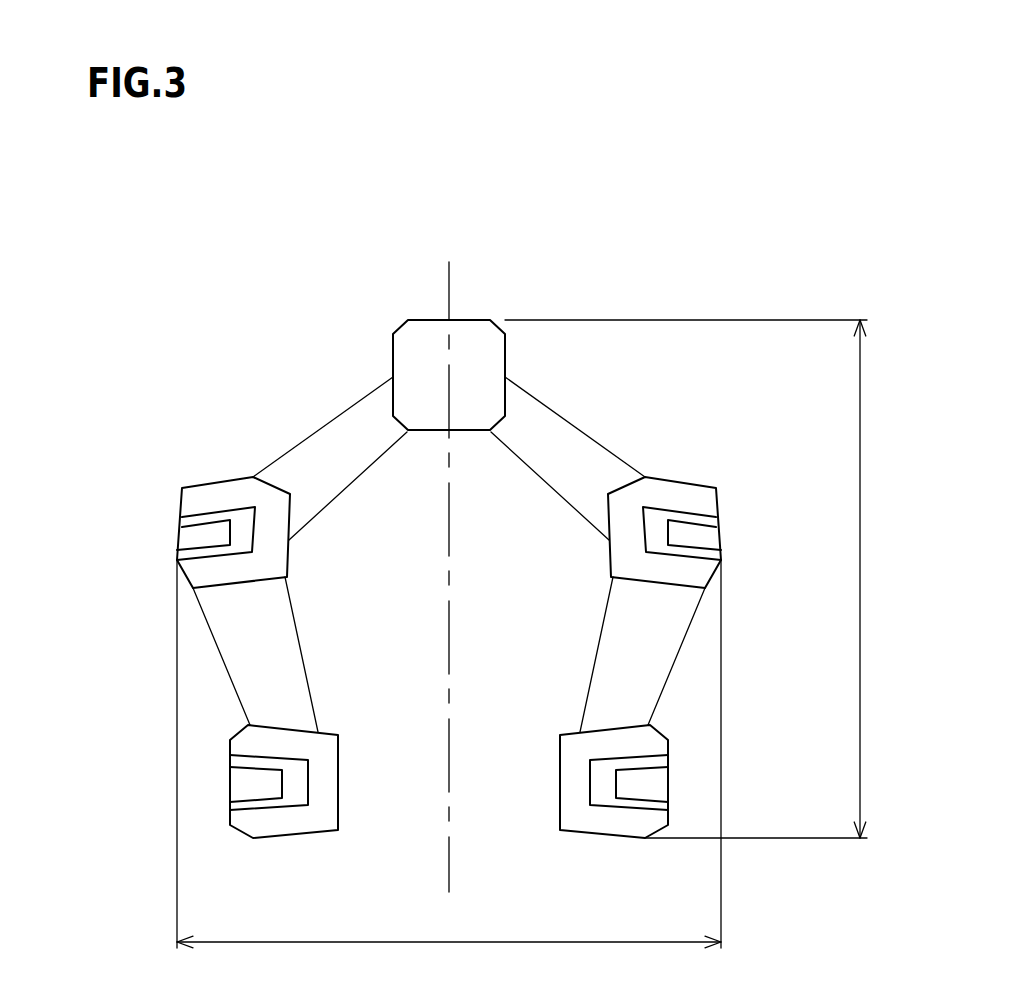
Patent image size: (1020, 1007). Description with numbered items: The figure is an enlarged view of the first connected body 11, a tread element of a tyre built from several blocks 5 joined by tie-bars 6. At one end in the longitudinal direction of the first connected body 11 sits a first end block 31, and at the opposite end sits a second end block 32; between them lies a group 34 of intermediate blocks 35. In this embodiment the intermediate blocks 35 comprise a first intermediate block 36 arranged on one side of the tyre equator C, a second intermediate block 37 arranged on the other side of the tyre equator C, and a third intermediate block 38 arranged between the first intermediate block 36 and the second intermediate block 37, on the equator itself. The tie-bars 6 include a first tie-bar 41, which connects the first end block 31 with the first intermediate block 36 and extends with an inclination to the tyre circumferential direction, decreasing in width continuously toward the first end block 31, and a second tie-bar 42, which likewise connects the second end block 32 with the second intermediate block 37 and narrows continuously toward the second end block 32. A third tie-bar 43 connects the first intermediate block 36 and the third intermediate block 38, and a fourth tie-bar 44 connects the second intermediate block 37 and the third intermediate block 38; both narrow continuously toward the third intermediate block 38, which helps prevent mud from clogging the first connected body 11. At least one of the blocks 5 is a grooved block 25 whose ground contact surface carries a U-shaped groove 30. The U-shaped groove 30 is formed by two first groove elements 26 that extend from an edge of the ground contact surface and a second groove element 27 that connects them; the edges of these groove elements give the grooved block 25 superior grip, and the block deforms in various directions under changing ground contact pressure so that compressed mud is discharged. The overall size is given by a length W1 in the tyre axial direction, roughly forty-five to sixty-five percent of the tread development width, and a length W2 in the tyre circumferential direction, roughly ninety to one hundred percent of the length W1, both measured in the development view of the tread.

The first connected body 11 is at (365, 285).
The tyre equator C is at (449, 562).
The group of intermediate blocks 34 is at (468, 317).
The intermediate blocks 35 is at (483, 449).
The first intermediate block 36 is at (215, 538).
The second intermediate block 37 is at (678, 537).
The third intermediate block 38 is at (462, 380).
The third tie-bar 43 is at (330, 457).
The fourth tie-bar 44 is at (567, 457).
The grooved block 25 is at (675, 502).
The U-shaped groove 30 is at (657, 533).
The tie-bars 6 is at (449, 654).
The first tie-bar 41 is at (265, 658).
The second tie-bar 42 is at (633, 658).
The blocks 5 is at (449, 826).
The first end block 31 is at (260, 778).
The second end block 32 is at (623, 822).
The first groove elements 26 is at (637, 762).
The second groove element 27 is at (602, 787).
The length in the tyre axial direction W1 is at (449, 771).
The length in the tyre circumferential direction W2 is at (711, 579).